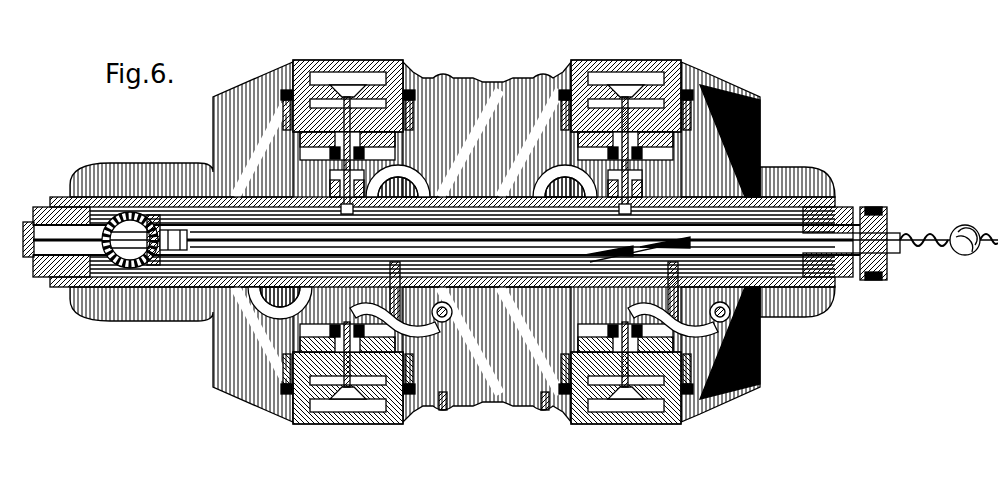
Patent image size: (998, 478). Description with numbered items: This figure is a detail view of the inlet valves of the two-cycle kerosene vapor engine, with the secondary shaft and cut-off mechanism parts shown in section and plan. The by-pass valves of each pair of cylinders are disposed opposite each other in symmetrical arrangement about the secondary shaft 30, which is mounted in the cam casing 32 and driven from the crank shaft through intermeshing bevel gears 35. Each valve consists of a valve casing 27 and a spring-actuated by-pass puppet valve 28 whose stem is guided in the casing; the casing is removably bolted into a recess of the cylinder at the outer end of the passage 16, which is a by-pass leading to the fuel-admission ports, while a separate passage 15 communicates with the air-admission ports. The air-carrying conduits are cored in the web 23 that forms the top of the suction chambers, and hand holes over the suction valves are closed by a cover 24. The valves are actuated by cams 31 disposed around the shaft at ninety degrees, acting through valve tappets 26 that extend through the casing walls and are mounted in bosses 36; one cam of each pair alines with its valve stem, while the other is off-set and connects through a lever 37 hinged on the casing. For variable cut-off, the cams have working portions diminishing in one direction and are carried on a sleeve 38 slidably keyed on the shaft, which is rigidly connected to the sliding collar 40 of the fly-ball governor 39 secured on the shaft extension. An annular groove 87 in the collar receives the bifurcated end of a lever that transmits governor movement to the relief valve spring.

The passage 15 is at (370, 78).
The passage 16 is at (478, 471).
The web 23 is at (467, 110).
The cover 24 is at (477, 180).
The valve tappet 26 is at (343, 176).
The valve casing 27 is at (285, 92).
The by-pass puppet valve 28 is at (344, 85).
The secondary shaft 30 is at (180, 257).
The cam 31 is at (607, 247).
The cam casing 32 is at (762, 196).
The bevel gear 35 is at (150, 267).
The boss 36 is at (337, 167).
The lever 37 is at (442, 410).
The sleeve 38 is at (225, 228).
The fly-ball governor 39 is at (968, 230).
The sliding collar 40 is at (885, 235).
The annular groove 87 is at (882, 278).